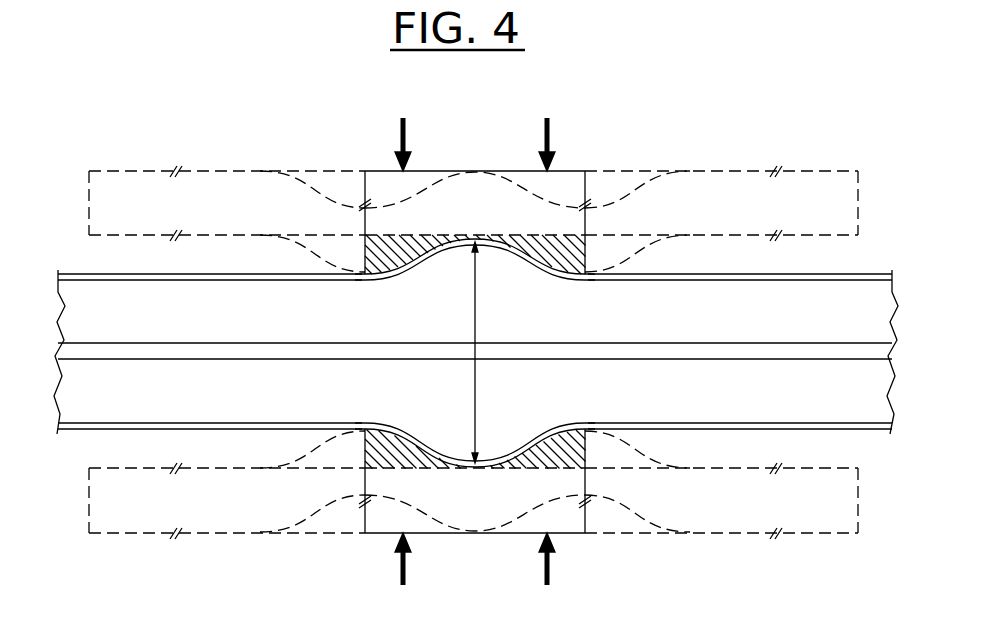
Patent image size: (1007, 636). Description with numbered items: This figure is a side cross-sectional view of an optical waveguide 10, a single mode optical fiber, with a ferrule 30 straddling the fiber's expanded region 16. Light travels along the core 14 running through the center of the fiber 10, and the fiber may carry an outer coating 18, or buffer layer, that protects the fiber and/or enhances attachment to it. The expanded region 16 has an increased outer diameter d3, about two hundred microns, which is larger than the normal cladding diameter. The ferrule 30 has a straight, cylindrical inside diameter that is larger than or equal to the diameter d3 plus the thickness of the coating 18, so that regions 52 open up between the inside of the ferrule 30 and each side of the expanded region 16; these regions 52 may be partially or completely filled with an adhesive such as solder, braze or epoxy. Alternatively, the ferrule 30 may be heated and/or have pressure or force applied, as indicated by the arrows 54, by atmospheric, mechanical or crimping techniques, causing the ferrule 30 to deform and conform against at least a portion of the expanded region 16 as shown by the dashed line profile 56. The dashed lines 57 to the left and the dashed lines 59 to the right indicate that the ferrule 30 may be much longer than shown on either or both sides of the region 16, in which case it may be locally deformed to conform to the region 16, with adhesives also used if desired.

The optical waveguide 10 is at (78, 270).
The core 14 is at (184, 345).
The expanded region 16 is at (422, 268).
The coating 18 is at (176, 273).
The ferrule 30 is at (365, 170).
The regions 52 is at (366, 248).
The arrows 54 is at (399, 123).
The dashed line profile 56 is at (437, 183).
The dashed lines 57 is at (207, 169).
The dashed lines 59 is at (647, 171).
The outer diameter of expanded region d3 is at (477, 326).